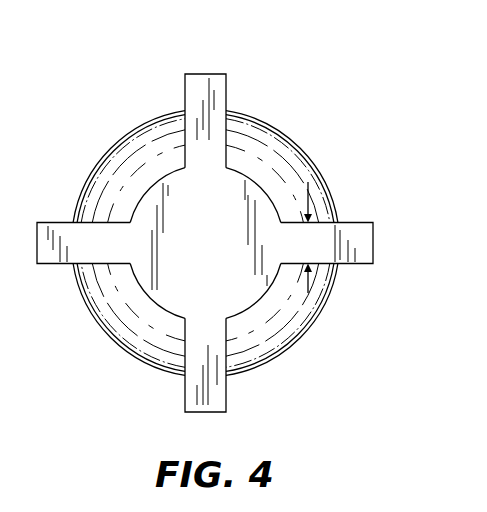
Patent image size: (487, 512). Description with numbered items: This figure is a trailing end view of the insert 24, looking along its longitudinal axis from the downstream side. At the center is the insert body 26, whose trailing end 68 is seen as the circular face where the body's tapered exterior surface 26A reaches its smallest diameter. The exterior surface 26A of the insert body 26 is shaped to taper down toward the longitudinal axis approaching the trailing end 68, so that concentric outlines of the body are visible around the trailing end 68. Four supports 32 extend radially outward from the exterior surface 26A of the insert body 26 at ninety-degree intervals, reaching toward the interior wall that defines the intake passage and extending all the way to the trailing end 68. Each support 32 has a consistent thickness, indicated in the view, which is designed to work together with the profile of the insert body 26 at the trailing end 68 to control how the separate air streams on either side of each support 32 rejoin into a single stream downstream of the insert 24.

The insert 24 is at (310, 96).
The insert body 26 is at (250, 130).
The exterior surface 26A is at (324, 150).
The supports 32 is at (200, 87).
The trailing end 68 is at (195, 254).